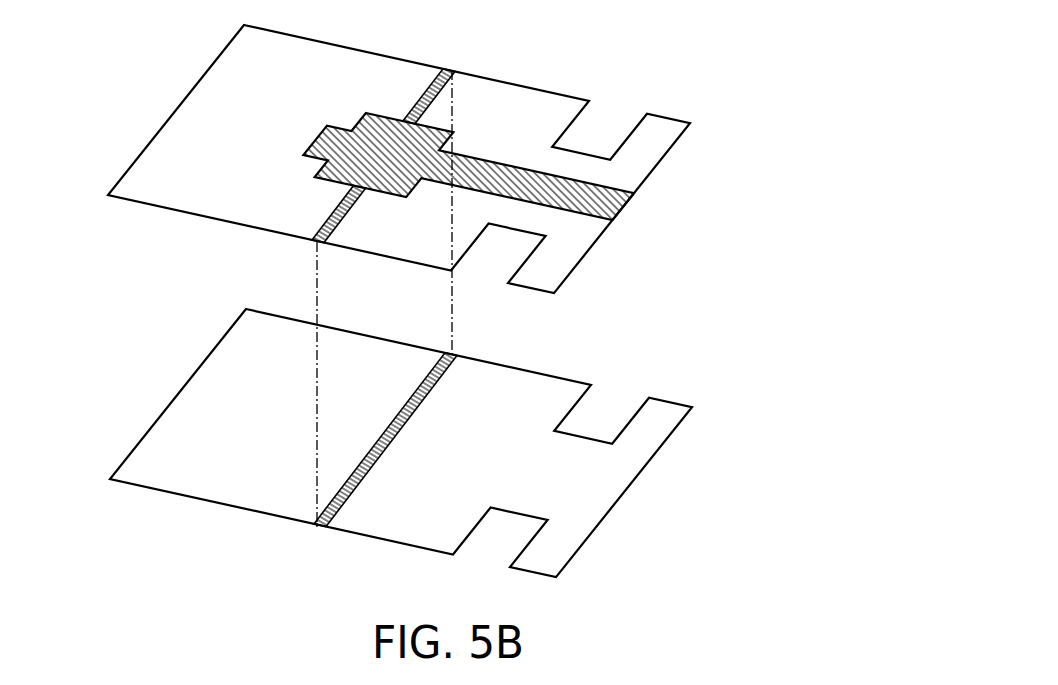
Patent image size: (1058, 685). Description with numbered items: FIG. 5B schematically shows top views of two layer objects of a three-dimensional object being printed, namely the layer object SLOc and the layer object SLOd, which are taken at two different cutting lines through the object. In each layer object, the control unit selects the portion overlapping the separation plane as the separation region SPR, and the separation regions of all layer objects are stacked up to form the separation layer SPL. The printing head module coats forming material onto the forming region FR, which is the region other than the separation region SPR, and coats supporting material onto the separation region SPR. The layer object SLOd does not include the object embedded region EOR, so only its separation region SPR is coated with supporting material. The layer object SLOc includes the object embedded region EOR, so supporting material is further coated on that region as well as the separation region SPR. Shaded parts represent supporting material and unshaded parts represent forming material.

The layer object SLOc is at (668, 149).
The layer object SLOd is at (673, 436).
The object embedded region EOR is at (603, 201).
The separation region SPR is at (446, 75).
The separation layer SPL is at (350, 297).
The forming region FR is at (503, 123).